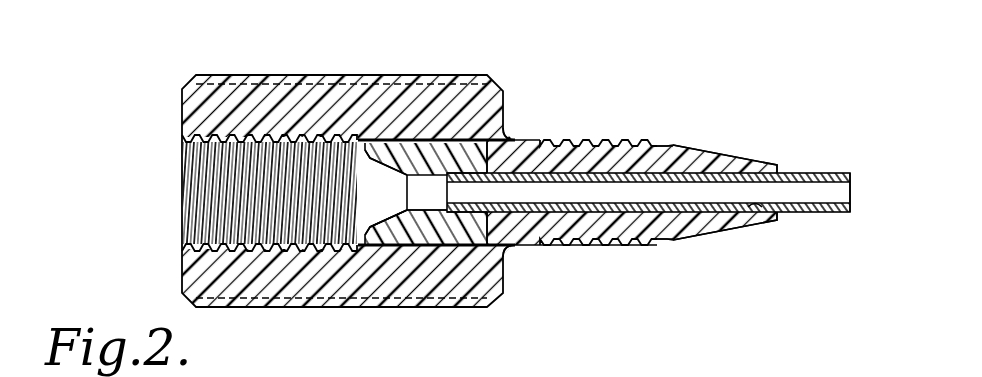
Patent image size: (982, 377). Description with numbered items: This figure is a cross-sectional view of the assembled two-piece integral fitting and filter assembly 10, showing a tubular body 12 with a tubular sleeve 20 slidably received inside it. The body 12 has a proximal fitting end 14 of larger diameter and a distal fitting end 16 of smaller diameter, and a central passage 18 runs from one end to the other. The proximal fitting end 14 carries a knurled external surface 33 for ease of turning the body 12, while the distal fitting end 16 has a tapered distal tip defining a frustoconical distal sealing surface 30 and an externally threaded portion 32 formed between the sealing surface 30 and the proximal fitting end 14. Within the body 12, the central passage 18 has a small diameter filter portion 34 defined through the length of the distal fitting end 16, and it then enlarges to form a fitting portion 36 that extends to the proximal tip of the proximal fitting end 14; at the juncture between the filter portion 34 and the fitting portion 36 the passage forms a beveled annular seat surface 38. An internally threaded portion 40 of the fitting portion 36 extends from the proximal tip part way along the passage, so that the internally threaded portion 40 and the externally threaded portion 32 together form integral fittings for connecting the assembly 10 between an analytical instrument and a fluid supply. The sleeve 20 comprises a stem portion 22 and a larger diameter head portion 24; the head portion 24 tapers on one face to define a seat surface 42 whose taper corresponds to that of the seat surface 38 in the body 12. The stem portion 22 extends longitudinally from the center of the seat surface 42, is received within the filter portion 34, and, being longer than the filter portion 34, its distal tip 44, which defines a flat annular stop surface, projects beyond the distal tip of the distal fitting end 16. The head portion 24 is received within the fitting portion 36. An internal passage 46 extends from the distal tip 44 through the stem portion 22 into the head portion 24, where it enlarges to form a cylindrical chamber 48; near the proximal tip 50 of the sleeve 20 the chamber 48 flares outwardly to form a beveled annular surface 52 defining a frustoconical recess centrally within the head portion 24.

The integral fitting and filter assembly 10 is at (63, 210).
The tubular body 12 is at (583, 77).
The proximal fitting end 14 is at (431, 46).
The distal fitting end 16 is at (658, 278).
The central passage 18 is at (474, 243).
The tubular sleeve 20 is at (809, 160).
The stem portion 22 is at (818, 212).
The head portion 24 is at (404, 158).
The distal sealing surface 30 is at (733, 157).
The externally threaded portion 32 is at (600, 140).
The knurled external surface 33 is at (238, 74).
The filter portion 34 is at (668, 143).
The fitting portion 36 is at (478, 140).
The beveled annular seat surface 38 is at (507, 250).
The internally threaded portion 40 is at (297, 249).
The seat surface 42 is at (517, 132).
The distal tip 44 is at (852, 172).
The internal passage 46 is at (753, 212).
The cylindrical chamber 48 is at (418, 208).
The proximal tip 50 is at (392, 222).
The beveled annular surface 52 is at (368, 146).